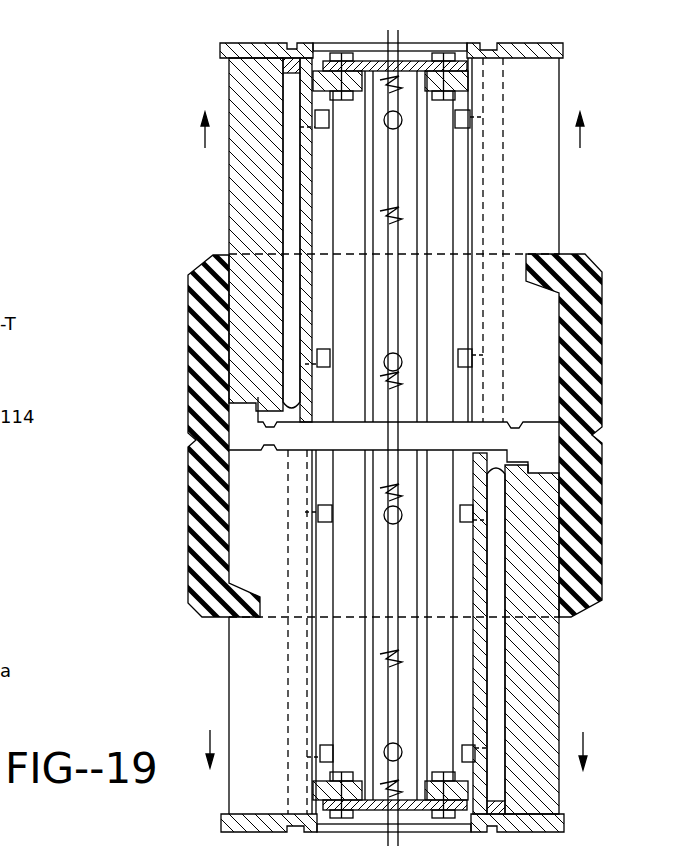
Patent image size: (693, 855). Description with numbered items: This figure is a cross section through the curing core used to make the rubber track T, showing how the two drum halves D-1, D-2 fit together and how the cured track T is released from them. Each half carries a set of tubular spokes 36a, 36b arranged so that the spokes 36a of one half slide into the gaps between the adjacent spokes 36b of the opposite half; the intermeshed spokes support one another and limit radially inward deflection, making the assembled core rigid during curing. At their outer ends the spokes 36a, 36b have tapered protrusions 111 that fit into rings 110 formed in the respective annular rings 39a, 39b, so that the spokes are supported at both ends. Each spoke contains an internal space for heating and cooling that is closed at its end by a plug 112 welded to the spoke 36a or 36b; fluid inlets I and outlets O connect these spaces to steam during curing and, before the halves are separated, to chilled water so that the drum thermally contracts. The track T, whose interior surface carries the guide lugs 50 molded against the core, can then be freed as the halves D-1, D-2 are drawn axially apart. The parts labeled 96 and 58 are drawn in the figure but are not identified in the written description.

The annular ring 39b is at (222, 52).
The annular ring 39a is at (227, 818).
The rod 96 is at (290, 48).
The plug 112 is at (293, 70).
The drum half D-2 is at (215, 234).
The spokes 36b is at (252, 218).
The drum half D-1 is at (568, 639).
The spokes 36a is at (538, 657).
The rings 110 is at (513, 54).
The protrusions 111 is at (270, 450).
The guide lugs 50 is at (528, 258).
The collar 58 is at (578, 343).
The rubber track T is at (190, 375).
The fluid outlets O is at (329, 123).
The fluid inlets I is at (330, 358).